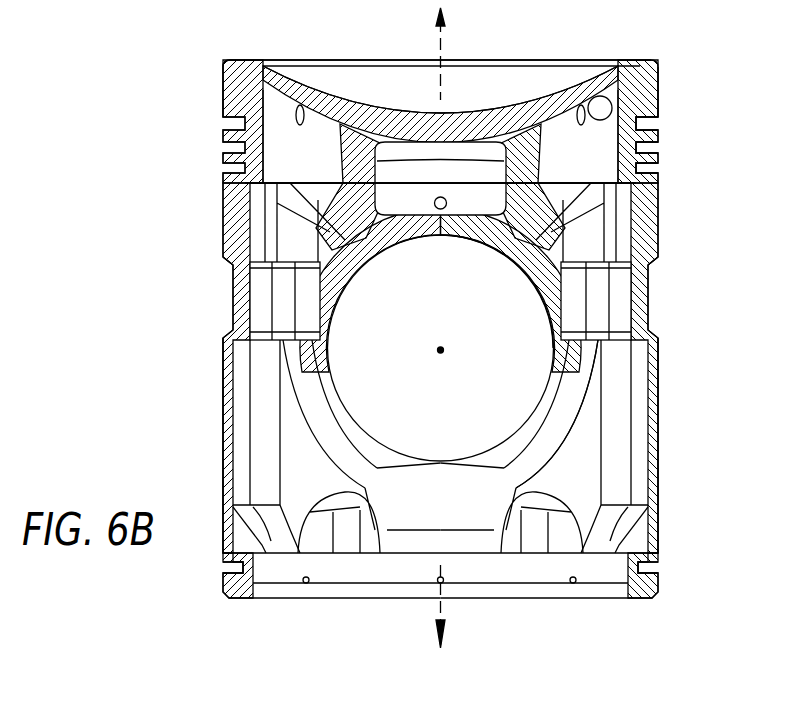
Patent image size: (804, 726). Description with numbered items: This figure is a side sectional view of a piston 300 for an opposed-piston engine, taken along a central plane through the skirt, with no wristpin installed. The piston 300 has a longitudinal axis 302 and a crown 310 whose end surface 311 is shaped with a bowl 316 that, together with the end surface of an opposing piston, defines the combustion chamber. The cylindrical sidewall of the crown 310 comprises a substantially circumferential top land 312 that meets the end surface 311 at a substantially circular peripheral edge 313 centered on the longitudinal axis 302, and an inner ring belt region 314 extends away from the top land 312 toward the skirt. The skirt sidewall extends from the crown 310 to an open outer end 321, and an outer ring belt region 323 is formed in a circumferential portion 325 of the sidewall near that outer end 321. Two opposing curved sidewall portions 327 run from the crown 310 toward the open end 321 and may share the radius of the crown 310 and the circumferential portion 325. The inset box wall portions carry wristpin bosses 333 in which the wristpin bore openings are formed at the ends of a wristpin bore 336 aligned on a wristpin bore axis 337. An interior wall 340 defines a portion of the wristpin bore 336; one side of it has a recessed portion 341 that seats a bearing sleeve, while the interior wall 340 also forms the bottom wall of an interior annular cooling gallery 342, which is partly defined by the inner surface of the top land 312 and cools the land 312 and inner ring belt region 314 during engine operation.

The piston 300 is at (124, 150).
The longitudinal axis 302 is at (442, 48).
The crown 310 is at (662, 87).
The end surface 311 is at (640, 60).
The top land 312 is at (223, 100).
The peripheral edge 313 is at (225, 60).
The inner ring belt region 314 is at (682, 107).
The bowl 316 is at (385, 85).
The open outer end 321 is at (391, 610).
The outer ring belt region 323 is at (682, 550).
The circumferential portion 325 is at (660, 547).
The curved sidewall portions 327 is at (225, 440).
The wristpin bosses 333 is at (555, 437).
The wristpin bore 336 is at (345, 410).
The wristpin bore axis 337 is at (443, 349).
The interior wall 340 is at (258, 185).
The recessed portion 341 is at (530, 275).
The interior annular cooling gallery 342 is at (285, 135).